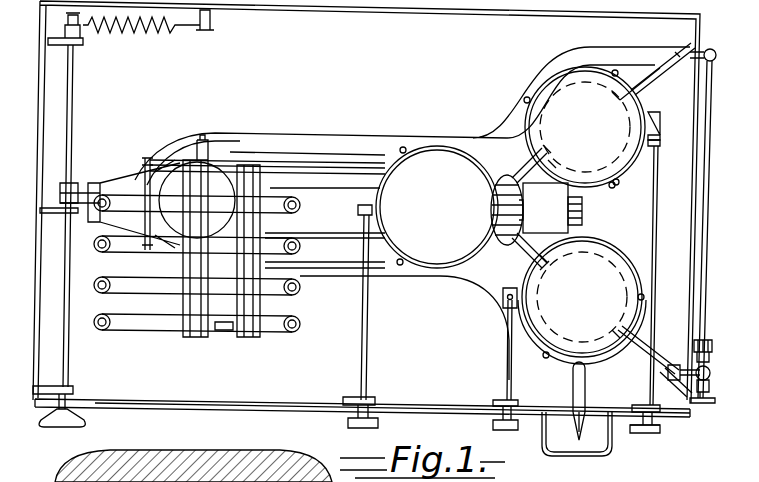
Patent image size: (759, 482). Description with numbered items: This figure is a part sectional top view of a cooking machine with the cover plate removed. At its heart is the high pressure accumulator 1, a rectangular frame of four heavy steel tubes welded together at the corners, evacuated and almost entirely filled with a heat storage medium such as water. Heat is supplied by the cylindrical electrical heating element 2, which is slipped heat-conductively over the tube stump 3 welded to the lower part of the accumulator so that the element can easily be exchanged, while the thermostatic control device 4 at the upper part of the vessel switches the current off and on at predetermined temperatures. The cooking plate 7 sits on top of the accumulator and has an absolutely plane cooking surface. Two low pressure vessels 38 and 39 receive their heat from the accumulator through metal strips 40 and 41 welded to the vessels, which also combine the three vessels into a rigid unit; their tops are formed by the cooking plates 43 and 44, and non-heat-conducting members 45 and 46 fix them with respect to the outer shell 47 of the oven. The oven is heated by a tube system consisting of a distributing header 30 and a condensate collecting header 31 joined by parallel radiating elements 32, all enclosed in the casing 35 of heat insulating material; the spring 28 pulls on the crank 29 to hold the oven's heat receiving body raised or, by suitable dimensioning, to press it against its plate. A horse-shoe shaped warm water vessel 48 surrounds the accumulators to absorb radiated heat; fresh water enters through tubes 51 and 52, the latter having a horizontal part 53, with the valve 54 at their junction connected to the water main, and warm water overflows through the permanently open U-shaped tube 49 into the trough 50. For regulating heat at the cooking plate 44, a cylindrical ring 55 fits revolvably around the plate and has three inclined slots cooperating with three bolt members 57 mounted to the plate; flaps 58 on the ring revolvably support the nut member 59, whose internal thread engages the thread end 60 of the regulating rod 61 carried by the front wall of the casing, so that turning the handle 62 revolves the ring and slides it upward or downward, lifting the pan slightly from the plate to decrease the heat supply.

The high pressure accumulator 1 is at (267, 214).
The cylindrical electrical heating element 2 is at (545, 208).
The tube stump 3 is at (583, 213).
The thermostatic control device 4 is at (495, 215).
The cooking plate 7 is at (437, 207).
The spring 28 is at (158, 31).
The crank 29 is at (68, 20).
The distributing header 30 is at (195, 236).
The condensate collecting header 31 is at (248, 251).
The radiating elements 32 is at (140, 308).
The casing 35 is at (218, 335).
The low pressure vessel 38 is at (600, 253).
The low pressure vessel 39 is at (623, 153).
The metal strip 40 is at (522, 248).
The metal strip 41 is at (525, 168).
The cooking plate 43 is at (583, 297).
The cooking plate 44 is at (584, 127).
The member 45 is at (655, 355).
The member 46 is at (663, 63).
The outer shell 47 is at (432, 12).
The warm water vessel 48 is at (307, 148).
The U-shaped tube 49 is at (575, 392).
The trough 50 is at (568, 447).
The tube 51 is at (683, 367).
The tube 52 is at (705, 50).
The horizontal part 53 is at (710, 203).
The valve 54 is at (710, 382).
The cylindrical ring 55 is at (640, 95).
The bolt members 57 is at (615, 187).
The flaps 58 is at (653, 117).
The nut member 59 is at (655, 138).
The thread end 60 is at (657, 147).
The regulating rod 61 is at (652, 250).
The handle 62 is at (655, 433).